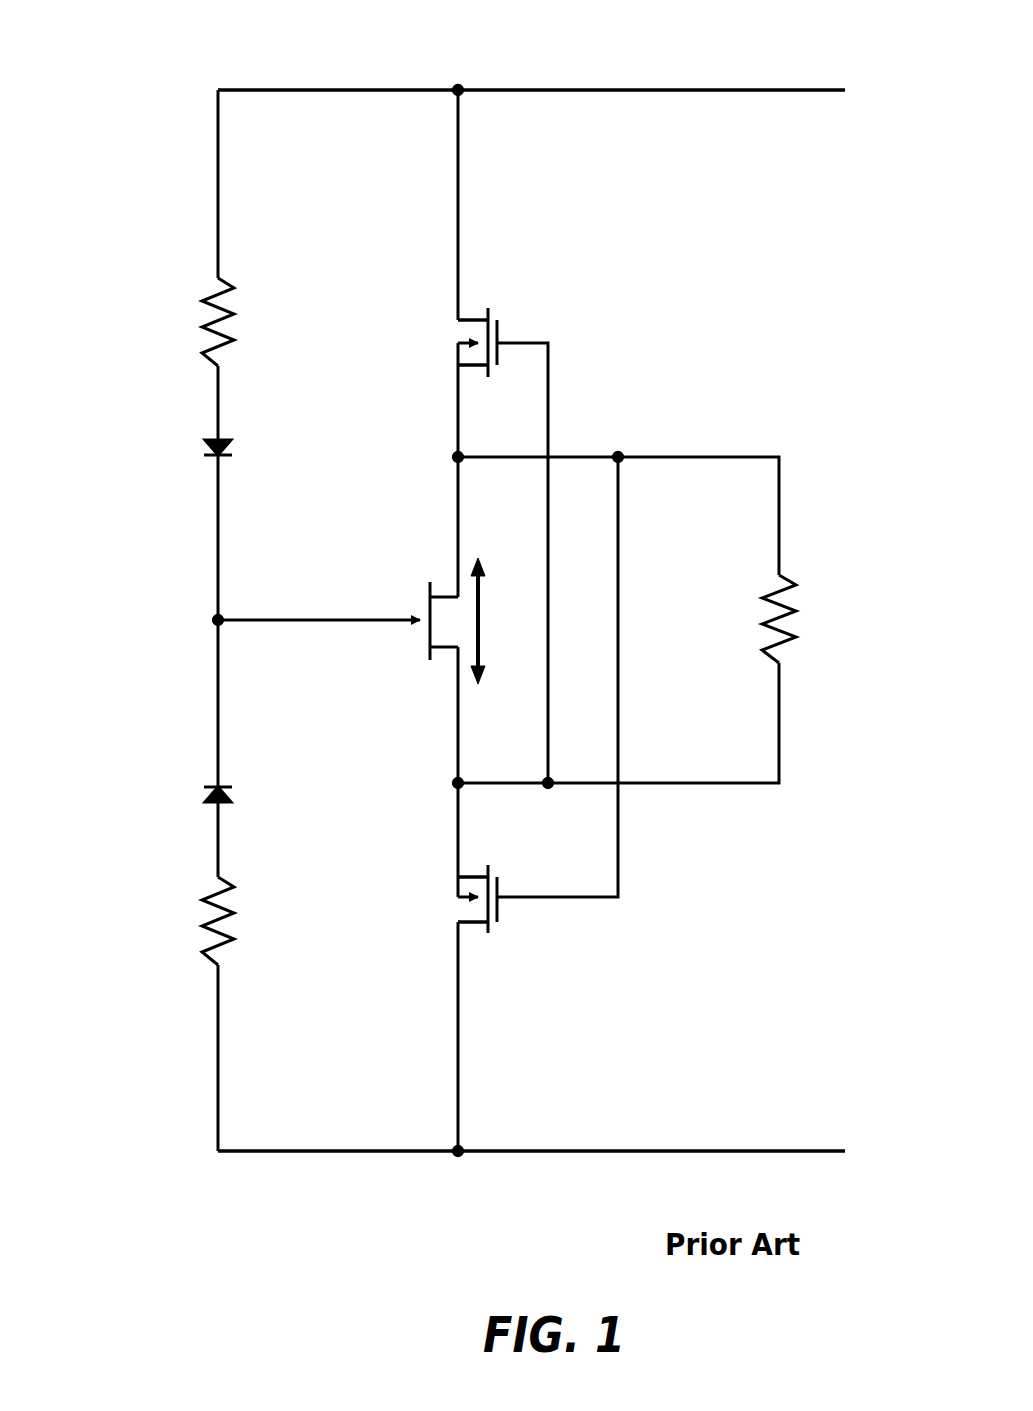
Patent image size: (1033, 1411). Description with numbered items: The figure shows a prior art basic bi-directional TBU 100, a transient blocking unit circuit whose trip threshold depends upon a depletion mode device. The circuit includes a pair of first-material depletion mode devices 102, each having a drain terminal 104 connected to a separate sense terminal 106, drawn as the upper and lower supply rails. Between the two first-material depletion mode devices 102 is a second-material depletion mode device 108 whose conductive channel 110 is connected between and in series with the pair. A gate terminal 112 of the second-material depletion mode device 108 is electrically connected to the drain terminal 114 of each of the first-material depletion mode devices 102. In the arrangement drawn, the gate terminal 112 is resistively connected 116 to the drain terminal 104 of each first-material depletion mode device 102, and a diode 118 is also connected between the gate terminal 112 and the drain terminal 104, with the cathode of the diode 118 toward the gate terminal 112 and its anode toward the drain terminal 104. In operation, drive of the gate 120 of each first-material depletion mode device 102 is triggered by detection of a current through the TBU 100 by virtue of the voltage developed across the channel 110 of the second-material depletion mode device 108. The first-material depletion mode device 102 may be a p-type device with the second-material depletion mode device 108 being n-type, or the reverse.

The bi-directional TBU 100 is at (135, 75).
The first-material depletion mode device 102 is at (524, 303).
The drain terminal 104 is at (468, 317).
The sense terminal 106 is at (548, 90).
The second-material depletion mode device 108 is at (408, 573).
The conductive channel 110 is at (480, 623).
The gate terminal 112 is at (413, 623).
The drain terminal 114 is at (468, 368).
The resistive connection 116 is at (233, 313).
The diode 118 is at (227, 440).
The gate 120 is at (518, 342).